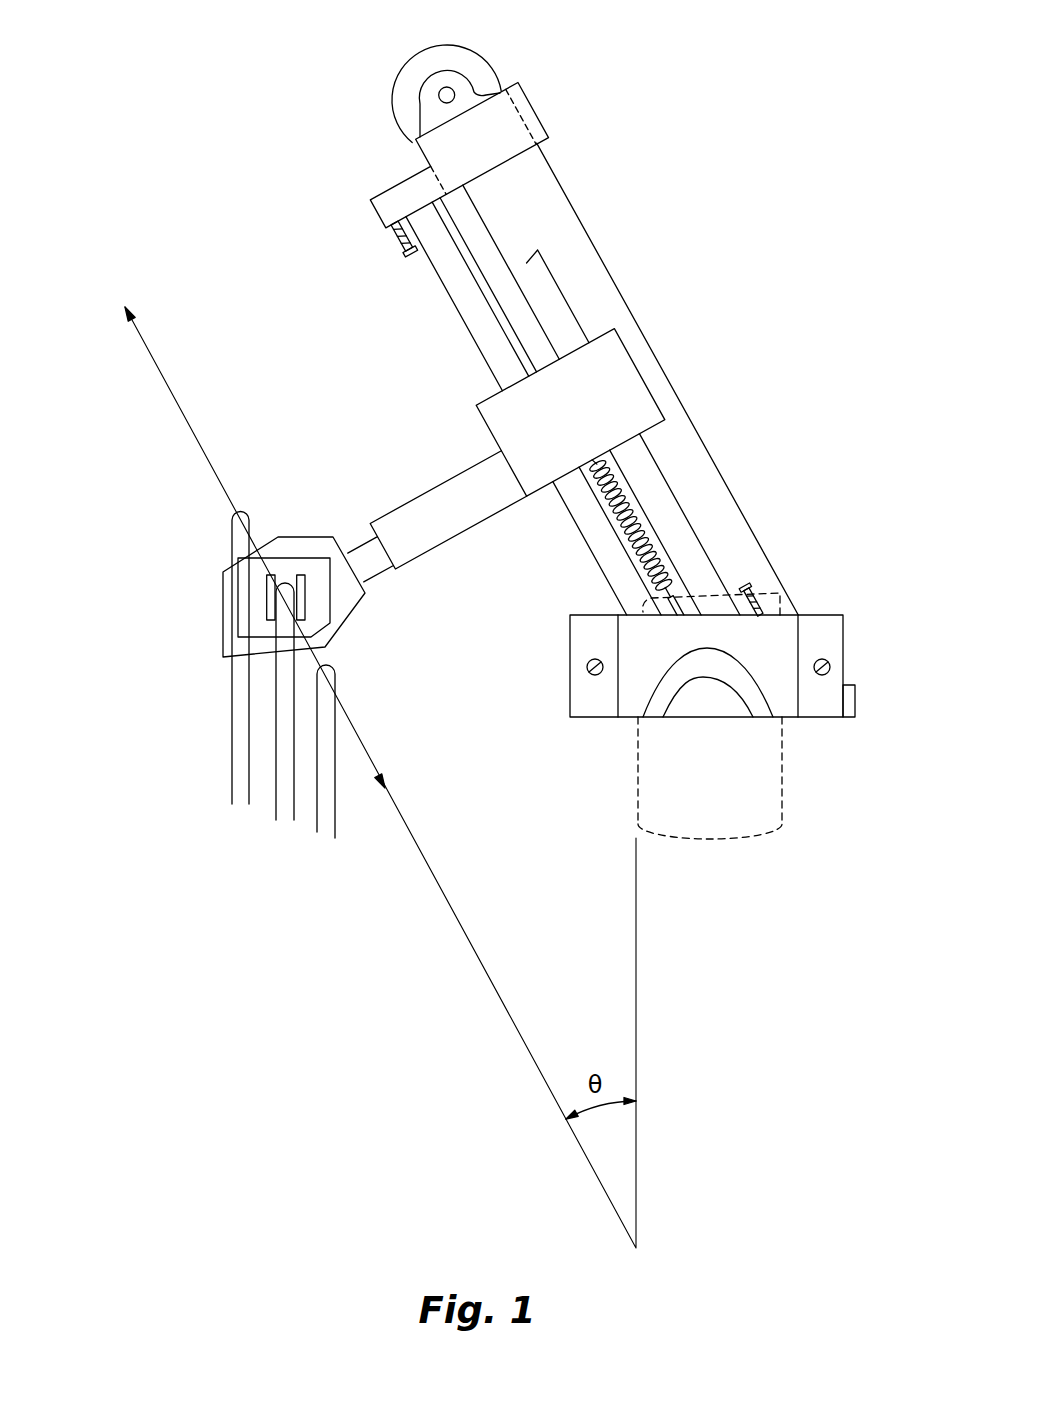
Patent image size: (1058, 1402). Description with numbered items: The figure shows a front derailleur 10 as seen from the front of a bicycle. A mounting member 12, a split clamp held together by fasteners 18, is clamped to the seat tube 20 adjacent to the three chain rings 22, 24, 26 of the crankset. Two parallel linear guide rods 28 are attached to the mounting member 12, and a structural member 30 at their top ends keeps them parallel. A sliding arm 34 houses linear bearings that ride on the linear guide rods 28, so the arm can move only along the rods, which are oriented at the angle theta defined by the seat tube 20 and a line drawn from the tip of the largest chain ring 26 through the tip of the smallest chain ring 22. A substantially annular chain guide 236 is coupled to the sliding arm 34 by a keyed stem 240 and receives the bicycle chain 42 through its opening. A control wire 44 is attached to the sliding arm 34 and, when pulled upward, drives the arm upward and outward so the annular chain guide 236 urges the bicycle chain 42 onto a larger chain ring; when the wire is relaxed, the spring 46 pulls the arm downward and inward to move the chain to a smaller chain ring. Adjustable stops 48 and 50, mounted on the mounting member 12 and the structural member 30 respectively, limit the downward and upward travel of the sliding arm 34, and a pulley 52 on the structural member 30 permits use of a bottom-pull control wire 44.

The front derailleur 10 is at (150, 158).
The mounting member 12 is at (580, 705).
The fasteners 18 is at (587, 662).
The seat tube 20 is at (770, 792).
The chain ring 22 is at (323, 807).
The chain ring 24 is at (283, 773).
The chain ring 26 is at (237, 708).
The linear guide rods 28 is at (573, 416).
The structural member 30 is at (451, 155).
The sliding arm 34 is at (570, 413).
The bicycle chain 42 is at (303, 605).
The control wire 44 is at (619, 406).
The spring 46 is at (637, 538).
The adjustable stop 48 is at (752, 600).
The adjustable stop 50 is at (402, 238).
The pulley 52 is at (468, 63).
The annular chain guide 236 is at (290, 537).
The stem 240 is at (433, 518).